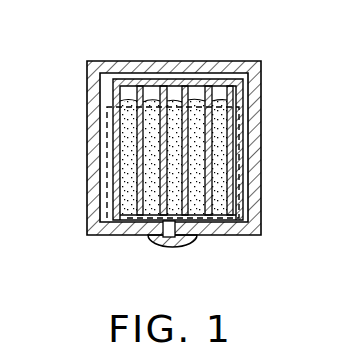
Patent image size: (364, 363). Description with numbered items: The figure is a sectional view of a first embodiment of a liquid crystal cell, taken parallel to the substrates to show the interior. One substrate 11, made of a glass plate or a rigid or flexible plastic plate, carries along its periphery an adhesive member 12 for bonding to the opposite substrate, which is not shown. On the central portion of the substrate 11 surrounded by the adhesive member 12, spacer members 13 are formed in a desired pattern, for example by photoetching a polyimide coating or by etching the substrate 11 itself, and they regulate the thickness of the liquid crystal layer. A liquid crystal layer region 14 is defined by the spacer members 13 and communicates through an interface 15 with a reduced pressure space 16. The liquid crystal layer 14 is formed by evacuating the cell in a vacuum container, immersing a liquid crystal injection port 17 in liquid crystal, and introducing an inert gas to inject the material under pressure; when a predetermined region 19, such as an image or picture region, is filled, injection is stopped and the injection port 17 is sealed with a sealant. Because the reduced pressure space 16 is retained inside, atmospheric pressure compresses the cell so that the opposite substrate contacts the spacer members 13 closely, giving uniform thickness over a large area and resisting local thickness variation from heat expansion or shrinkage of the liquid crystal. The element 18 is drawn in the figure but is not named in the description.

The outer casing 11 is at (268, 80).
The inner container 12 is at (247, 125).
The electrode compartment 13 is at (178, 94).
The electrolyte 14 is at (221, 194).
The electrode compartment 15 is at (220, 94).
The electrode compartment 16 is at (128, 94).
The terminal lead 17 is at (178, 247).
The seal 18 is at (152, 247).
The heater jacket 19 is at (108, 173).